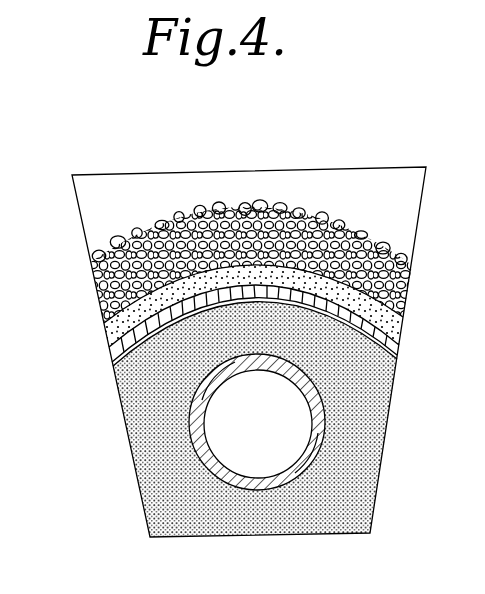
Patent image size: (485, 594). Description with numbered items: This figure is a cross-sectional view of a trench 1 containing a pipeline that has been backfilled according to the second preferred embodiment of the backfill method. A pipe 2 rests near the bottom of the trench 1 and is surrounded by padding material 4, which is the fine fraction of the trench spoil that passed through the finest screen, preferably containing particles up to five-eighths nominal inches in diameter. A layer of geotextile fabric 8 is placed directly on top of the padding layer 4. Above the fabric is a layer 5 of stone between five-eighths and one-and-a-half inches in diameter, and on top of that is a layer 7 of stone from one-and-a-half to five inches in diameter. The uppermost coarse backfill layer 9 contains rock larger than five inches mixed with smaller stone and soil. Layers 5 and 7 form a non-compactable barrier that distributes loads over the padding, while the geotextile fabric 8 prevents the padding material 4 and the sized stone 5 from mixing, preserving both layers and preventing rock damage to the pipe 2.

The trench 1 is at (182, 183).
The pipe 2 is at (200, 418).
The padding material 4 is at (148, 457).
The layer of stone 5 is at (107, 333).
The layer of stone 7 is at (102, 302).
The geotextile fabric 8 is at (116, 358).
The coarse backfill layer 9 is at (142, 232).